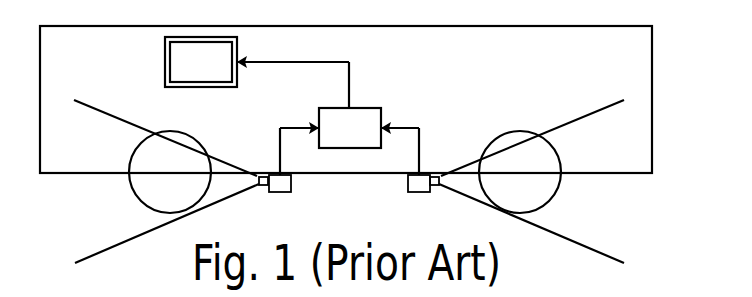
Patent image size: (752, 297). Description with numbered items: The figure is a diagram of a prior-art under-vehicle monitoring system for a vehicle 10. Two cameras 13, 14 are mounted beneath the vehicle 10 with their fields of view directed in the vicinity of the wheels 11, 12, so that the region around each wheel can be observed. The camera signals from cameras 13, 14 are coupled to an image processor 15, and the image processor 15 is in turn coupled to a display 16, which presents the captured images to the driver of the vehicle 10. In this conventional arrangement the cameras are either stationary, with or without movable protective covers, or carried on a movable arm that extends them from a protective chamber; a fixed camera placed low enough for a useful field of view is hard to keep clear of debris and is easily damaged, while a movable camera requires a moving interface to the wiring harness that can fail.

The vehicle 10 is at (662, 82).
The wheel 11 is at (137, 198).
The wheel 12 is at (559, 195).
The camera 13 is at (283, 192).
The camera 14 is at (418, 192).
The image processor 15 is at (363, 108).
The display 16 is at (165, 62).